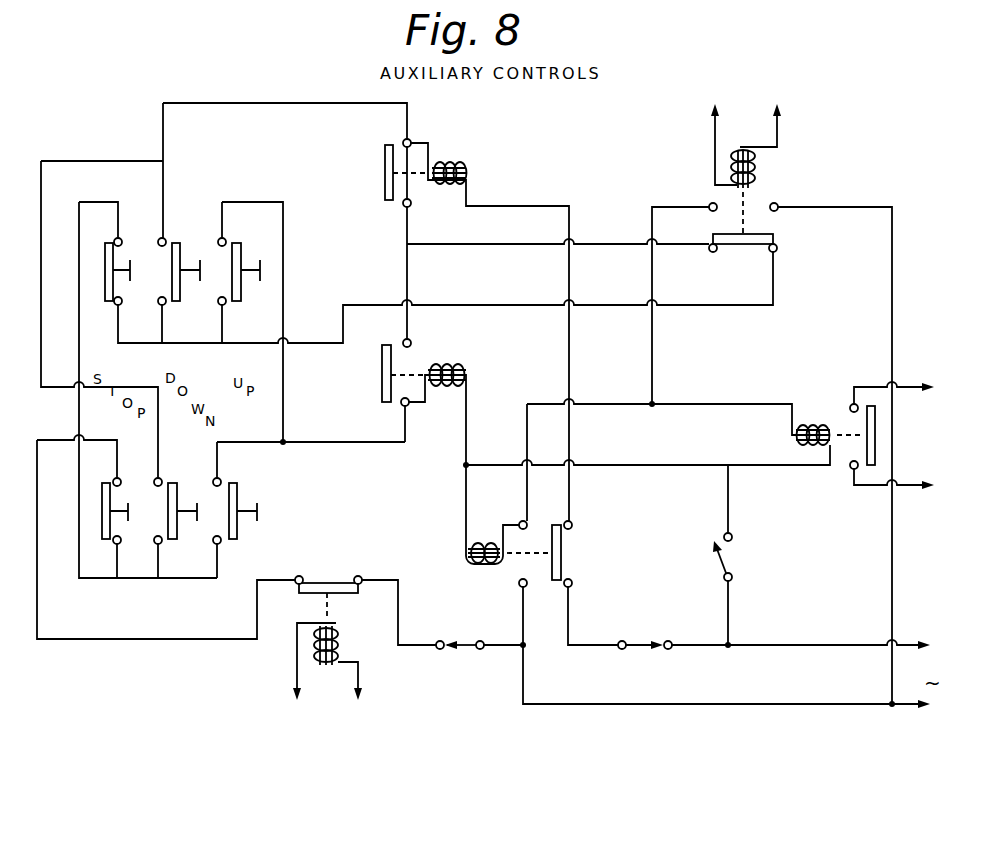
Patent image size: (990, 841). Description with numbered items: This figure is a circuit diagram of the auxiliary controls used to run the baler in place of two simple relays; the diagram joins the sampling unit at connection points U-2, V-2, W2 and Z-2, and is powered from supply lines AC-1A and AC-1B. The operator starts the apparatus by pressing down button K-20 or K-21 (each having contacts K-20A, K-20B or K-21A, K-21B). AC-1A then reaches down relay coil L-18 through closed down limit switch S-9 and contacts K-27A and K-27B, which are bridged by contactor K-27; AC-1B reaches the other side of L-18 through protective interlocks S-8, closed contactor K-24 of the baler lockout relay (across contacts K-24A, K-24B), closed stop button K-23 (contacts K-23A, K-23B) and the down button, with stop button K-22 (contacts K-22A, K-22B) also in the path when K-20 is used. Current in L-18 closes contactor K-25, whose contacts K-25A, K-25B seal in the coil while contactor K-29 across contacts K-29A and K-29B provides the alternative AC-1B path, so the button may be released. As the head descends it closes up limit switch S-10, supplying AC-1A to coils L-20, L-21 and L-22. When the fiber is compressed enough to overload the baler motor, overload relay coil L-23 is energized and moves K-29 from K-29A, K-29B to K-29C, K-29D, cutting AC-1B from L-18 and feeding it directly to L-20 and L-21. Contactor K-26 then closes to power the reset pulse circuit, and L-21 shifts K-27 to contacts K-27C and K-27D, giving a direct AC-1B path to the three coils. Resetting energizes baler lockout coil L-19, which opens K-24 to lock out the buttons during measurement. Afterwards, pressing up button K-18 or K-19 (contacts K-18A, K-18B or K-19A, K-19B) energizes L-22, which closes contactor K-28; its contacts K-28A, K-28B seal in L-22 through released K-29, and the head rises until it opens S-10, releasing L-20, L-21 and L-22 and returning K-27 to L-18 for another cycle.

The up button K-18 is at (231, 249).
The up button contact K-18A is at (225, 232).
The up button contact K-18B is at (223, 309).
The up button K-19 is at (230, 541).
The up button contact K-19A is at (223, 474).
The up button contact K-19B is at (223, 551).
The down button K-20 is at (175, 212).
The down button contact K-20A is at (170, 232).
The down button contact K-20B is at (170, 309).
The down button K-21 is at (171, 541).
The down button contact K-21A is at (166, 474).
The down button contact K-21B is at (166, 551).
The stop button K-22 is at (115, 249).
The stop button contact K-22A is at (121, 232).
The stop button contact K-22B is at (118, 309).
The stop button K-23 is at (113, 541).
The stop button contact K-23A is at (117, 474).
The stop button contact K-23B is at (113, 551).
The contactor of the baler lockout relay K-24 is at (332, 583).
The baler lockout relay contact K-24A is at (280, 574).
The baler lockout relay contact K-24B is at (380, 574).
The contactor K-25 is at (382, 174).
The contactor contact K-25A is at (412, 133).
The contactor contact K-25B is at (410, 213).
The contactor K-26 is at (885, 436).
The contactor K-27 is at (561, 556).
The contact K-27A is at (573, 592).
The contact K-27B is at (573, 518).
The contact K-27C is at (523, 592).
The contact K-27D is at (525, 518).
The contactor K-28 is at (377, 376).
The contactor contact K-28A is at (397, 413).
The contactor contact K-28B is at (405, 335).
The contactor K-29 is at (744, 237).
The contact K-29A is at (691, 241).
The contact K-29B is at (795, 241).
The contact K-29C is at (692, 200).
The contact K-29D is at (797, 200).
The down relay coil L-18 is at (467, 173).
The baler lockout coil L-19 is at (336, 658).
The coil L-20 is at (786, 435).
The coil L-21 is at (461, 546).
The coil L-22 is at (447, 367).
The baler overload relay coil L-23 is at (746, 136).
The protective interlocks S-8 is at (460, 657).
The down limit switch S-9 is at (645, 657).
The up limit switch S-10 is at (749, 557).
The connection point U-2 is at (943, 380).
The connection point V-2 is at (942, 487).
The connection point W2 is at (294, 707).
The connection point Z-2 is at (361, 707).
The AC supply line AC-1A is at (946, 651).
The AC supply line AC-1B is at (940, 715).